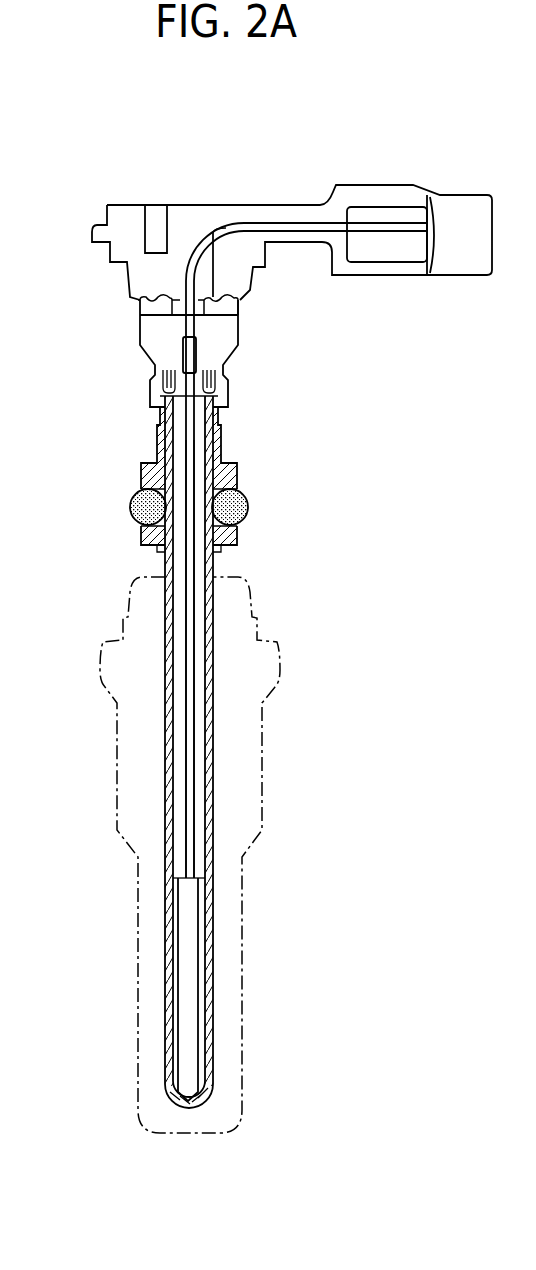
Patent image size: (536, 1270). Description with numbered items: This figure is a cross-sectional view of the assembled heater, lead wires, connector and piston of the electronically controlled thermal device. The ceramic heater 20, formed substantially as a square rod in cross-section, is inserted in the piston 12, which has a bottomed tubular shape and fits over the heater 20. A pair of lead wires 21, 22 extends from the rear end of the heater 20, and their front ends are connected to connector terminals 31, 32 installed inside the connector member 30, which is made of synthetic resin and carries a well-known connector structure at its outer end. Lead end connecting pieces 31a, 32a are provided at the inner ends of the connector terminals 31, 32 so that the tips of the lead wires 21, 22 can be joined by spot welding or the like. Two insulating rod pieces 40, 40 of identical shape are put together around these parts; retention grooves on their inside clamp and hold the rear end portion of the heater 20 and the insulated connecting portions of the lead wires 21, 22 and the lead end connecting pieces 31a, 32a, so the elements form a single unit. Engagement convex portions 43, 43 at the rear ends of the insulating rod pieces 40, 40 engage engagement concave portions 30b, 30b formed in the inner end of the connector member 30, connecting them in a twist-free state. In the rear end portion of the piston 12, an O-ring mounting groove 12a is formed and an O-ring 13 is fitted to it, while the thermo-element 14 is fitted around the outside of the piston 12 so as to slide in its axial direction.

The connector member 30 is at (413, 193).
The engagement concave portion 30b is at (212, 300).
The connector terminal 31 is at (306, 475).
The connector terminal 32 is at (318, 222).
The lead end connecting piece 31a is at (316, 392).
The lead end connecting piece 32a is at (196, 352).
The engagement convex portion for preventing twisting 43 is at (160, 312).
The lead wire 21 is at (299, 659).
The lead wire 22 is at (190, 443).
The O-ring 13 is at (248, 517).
The O-ring mounting groove 12a is at (235, 543).
The piston 12 is at (205, 948).
The insulating rod piece 40 is at (182, 826).
The ceramic heater 20 is at (190, 948).
The thermo-element 14 is at (242, 1087).